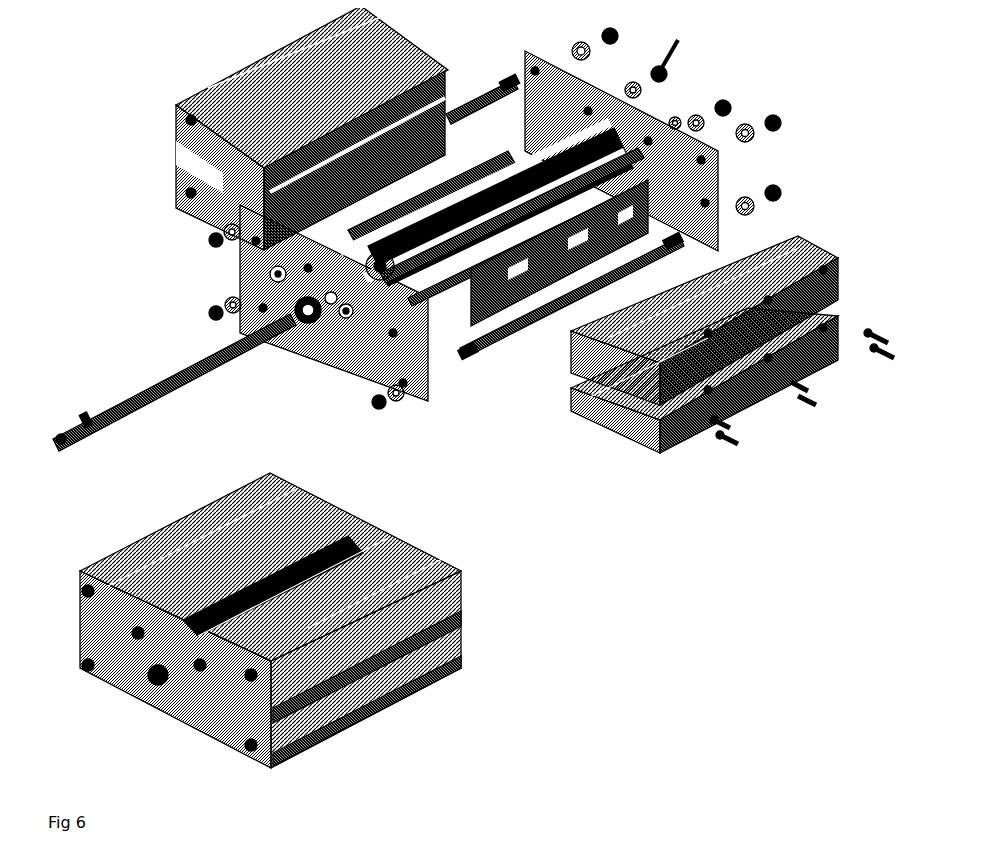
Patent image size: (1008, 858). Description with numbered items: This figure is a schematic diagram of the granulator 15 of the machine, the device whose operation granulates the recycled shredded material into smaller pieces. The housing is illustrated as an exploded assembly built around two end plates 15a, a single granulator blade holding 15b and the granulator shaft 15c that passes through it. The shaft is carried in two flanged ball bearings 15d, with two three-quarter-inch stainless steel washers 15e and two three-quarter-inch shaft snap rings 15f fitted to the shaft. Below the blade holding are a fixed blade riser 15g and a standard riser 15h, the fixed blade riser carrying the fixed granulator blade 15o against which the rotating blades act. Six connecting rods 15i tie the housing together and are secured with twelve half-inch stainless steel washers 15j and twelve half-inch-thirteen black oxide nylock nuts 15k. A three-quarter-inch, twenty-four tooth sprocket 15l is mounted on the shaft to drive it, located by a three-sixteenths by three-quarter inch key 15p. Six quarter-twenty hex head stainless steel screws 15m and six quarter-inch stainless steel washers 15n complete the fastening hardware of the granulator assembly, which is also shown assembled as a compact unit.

The granulator 15 is at (453, 613).
The end plate 15a is at (518, 78).
The granulator blade holding 15b is at (437, 280).
The granulator shaft 15c is at (217, 342).
The flanged ball bearing 15d is at (640, 107).
The three-quarter-inch stainless steel washer 15e is at (620, 76).
The three-quarter-inch shaft snap ring 15f is at (70, 414).
The fixed blade riser 15g is at (600, 413).
The standard riser 15h is at (400, 56).
The connecting rod 15i is at (485, 88).
The half-inch stainless steel washer 15j is at (566, 38).
The half-inch nylock nut 15k is at (676, 50).
The twenty-four tooth sprocket 15l is at (227, 280).
The quarter-twenty hex head stainless steel screw 15m is at (718, 431).
The quarter-inch stainless steel washer 15n is at (708, 420).
The fixed granulator blade 15o is at (474, 345).
The key 15p is at (57, 422).